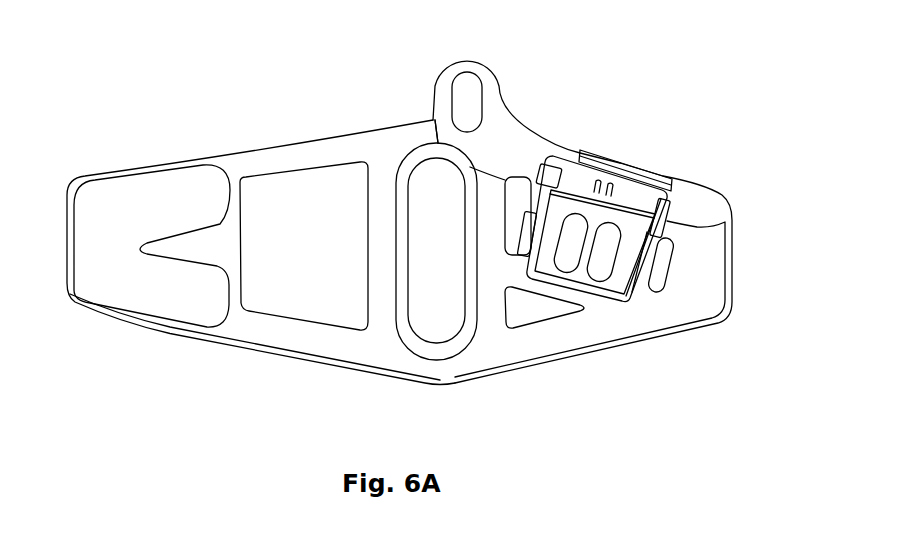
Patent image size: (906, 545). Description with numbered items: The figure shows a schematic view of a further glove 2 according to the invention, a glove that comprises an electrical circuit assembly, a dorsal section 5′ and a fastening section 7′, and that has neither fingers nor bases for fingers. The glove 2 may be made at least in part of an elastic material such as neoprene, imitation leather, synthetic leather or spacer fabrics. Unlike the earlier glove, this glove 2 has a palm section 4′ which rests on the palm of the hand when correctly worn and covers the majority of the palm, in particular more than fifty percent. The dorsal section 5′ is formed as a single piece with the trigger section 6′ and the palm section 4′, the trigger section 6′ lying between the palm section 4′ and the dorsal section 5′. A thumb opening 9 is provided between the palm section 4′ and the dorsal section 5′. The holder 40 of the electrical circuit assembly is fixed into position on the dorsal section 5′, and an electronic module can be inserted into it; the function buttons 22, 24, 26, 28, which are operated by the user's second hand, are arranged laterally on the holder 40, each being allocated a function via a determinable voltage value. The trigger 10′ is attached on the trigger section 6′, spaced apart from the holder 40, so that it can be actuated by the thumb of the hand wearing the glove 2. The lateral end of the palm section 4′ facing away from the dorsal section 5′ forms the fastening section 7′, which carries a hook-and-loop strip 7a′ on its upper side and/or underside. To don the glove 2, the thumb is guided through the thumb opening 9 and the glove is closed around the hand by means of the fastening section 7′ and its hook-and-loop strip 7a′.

The glove 2 is at (120, 87).
The palm section 4′ is at (317, 262).
The dorsal section 5′ is at (600, 318).
The trigger section 6′ is at (493, 92).
The fastening section 7′ is at (88, 342).
The hook-and-loop strip 7a′ is at (152, 246).
The thumb opening 9 is at (438, 290).
The trigger 10′ is at (470, 97).
The function button 22 is at (522, 228).
The function button 24 is at (438, 142).
The function button 26 is at (655, 266).
The function button 28 is at (660, 222).
The holder 40 is at (666, 186).